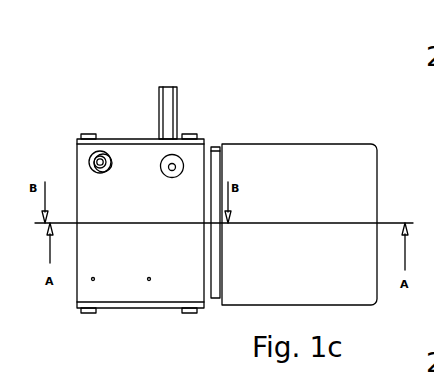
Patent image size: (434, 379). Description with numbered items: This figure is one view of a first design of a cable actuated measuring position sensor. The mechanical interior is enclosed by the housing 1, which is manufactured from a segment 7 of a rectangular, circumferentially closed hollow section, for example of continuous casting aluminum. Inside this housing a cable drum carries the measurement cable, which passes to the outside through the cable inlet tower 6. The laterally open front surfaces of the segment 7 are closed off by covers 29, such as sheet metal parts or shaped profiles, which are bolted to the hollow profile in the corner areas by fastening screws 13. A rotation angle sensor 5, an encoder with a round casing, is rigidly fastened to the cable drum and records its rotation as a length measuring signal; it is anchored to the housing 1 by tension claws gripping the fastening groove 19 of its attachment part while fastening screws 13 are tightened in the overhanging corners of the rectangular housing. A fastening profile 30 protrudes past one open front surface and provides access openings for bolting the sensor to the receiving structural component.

The housing 1 is at (62, 137).
The rotation angle sensor 5 is at (313, 143).
The cable inlet tower 6 is at (113, 166).
The segment 7 is at (77, 162).
The fastening screws 13 is at (195, 132).
The fastening groove 19 is at (170, 160).
The covers 29 is at (115, 140).
The fastening profile 30 is at (163, 87).